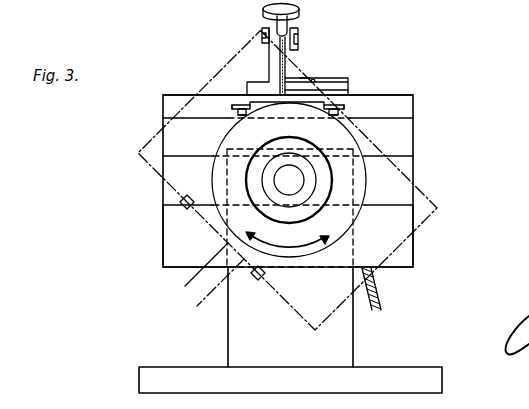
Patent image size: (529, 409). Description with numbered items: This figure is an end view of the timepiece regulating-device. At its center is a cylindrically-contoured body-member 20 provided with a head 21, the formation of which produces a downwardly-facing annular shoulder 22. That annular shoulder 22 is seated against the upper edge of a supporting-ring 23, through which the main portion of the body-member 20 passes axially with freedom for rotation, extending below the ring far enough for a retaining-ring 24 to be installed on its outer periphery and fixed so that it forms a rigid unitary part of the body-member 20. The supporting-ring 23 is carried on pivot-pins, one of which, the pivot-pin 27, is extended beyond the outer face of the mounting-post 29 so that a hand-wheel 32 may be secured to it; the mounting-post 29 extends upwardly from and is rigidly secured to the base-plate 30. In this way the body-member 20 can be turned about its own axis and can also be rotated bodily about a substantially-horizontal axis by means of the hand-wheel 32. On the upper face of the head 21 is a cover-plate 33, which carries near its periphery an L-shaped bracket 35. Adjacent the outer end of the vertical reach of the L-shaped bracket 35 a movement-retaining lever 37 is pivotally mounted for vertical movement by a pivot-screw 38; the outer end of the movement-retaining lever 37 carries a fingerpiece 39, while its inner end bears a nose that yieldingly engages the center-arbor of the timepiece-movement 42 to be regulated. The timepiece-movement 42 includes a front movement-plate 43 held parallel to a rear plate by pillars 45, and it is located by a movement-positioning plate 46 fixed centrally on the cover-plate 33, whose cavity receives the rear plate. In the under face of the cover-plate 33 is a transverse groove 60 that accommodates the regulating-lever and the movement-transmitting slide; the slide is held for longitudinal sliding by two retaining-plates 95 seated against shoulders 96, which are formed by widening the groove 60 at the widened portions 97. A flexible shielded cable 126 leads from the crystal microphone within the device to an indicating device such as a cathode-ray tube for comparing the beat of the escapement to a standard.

The body-member 20 is at (413, 144).
The head 21 is at (413, 132).
The annular shoulder 22 is at (402, 157).
The supporting-ring 23 is at (413, 176).
The retaining-ring 24 is at (413, 253).
The pivot-pin 27 is at (288, 195).
The mounting-post 29 is at (228, 342).
The base-plate 30 is at (163, 367).
The hand-wheel 32 is at (367, 185).
The cover-plate 33 is at (413, 98).
The L-shaped bracket 35 is at (267, 70).
The movement-retaining lever 37 is at (265, 21).
The pivot-screw 38 is at (298, 32).
The fingerpiece 39 is at (299, 9).
The timepiece-movement 42 is at (318, 80).
The front movement-plate 43 is at (302, 80).
The pillars 45 is at (321, 84).
The movement-positioning plate 46 is at (348, 89).
The transverse groove 60 is at (317, 105).
The retaining-plates 95 is at (244, 116).
The shoulders 96 is at (236, 107).
The widened portions of groove 97 is at (236, 114).
The flexible shielded cable 126 is at (380, 288).